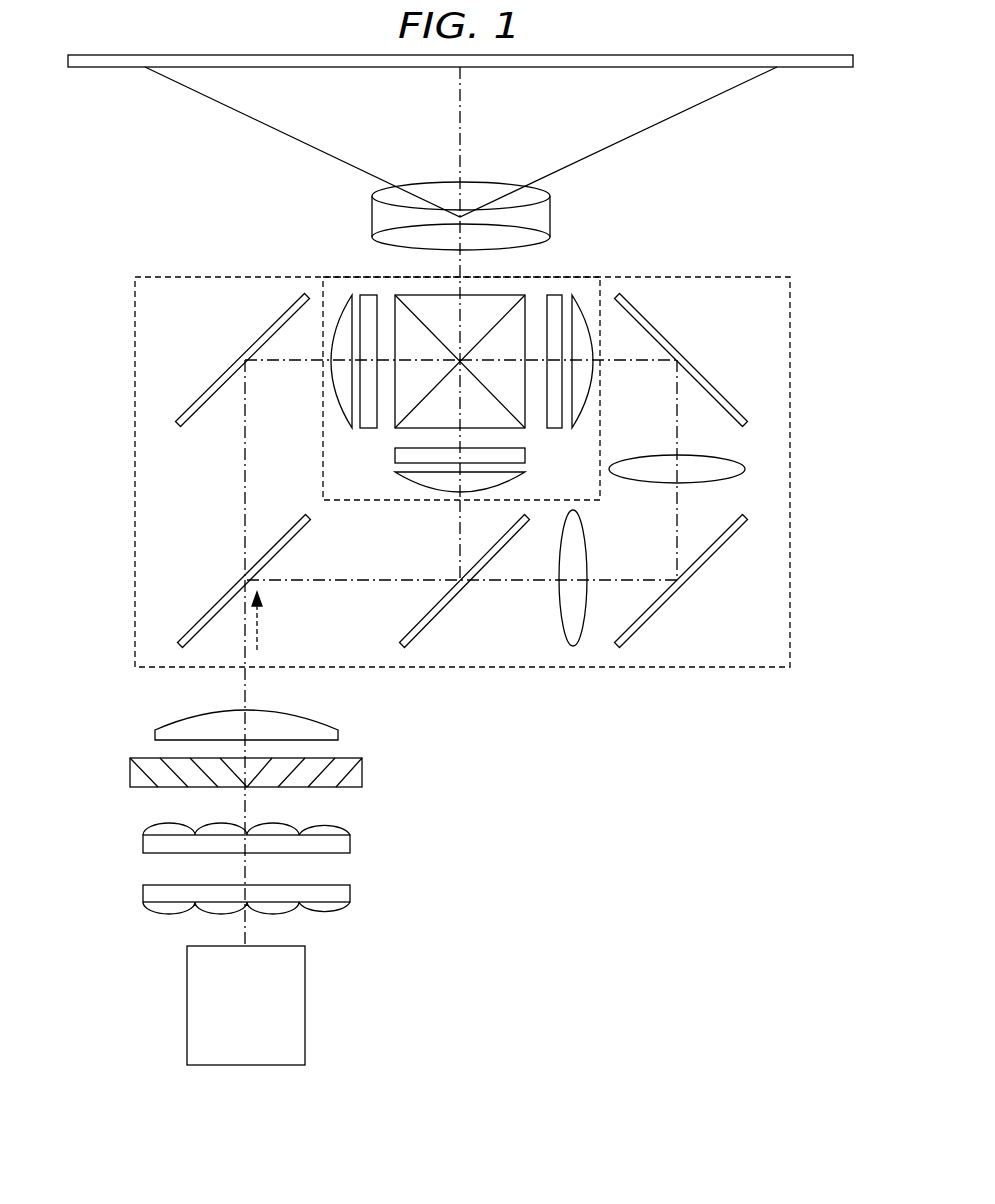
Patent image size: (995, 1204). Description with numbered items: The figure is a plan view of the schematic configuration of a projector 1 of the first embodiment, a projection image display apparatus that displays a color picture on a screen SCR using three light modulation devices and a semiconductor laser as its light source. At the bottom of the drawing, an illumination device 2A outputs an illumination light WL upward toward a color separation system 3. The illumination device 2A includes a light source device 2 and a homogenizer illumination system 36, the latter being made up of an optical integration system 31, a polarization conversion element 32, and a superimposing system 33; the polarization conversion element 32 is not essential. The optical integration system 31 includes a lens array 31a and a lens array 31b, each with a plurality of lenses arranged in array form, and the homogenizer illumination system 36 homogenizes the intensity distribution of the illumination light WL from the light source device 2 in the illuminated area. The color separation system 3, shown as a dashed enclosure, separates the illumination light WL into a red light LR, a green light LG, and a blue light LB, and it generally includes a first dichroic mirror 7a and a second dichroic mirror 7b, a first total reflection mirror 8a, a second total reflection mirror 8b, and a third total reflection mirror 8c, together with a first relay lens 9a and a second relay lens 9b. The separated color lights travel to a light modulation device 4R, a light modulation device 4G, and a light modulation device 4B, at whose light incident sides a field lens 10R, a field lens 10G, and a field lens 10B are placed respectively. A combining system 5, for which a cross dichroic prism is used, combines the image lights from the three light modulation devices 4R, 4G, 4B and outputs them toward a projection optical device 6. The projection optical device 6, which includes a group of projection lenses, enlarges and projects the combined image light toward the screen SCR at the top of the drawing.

The projector 1 is at (803, 248).
The light source device 2 is at (353, 1005).
The illumination device 2A is at (354, 882).
The color separation system 3 is at (135, 418).
The light modulation device 4R is at (367, 292).
The light modulation device 4G is at (397, 455).
The light modulation device 4B is at (556, 292).
The combining system 5 is at (483, 302).
The projection optical device 6 is at (441, 194).
The first dichroic mirror 7a is at (210, 612).
The second dichroic mirror 7b is at (456, 622).
The first total reflection mirror 8a is at (222, 375).
The second total reflection mirror 8b is at (705, 563).
The third total reflection mirror 8c is at (705, 378).
The first relay lens 9a is at (560, 590).
The second relay lens 9b is at (735, 470).
The field lens 10R is at (341, 292).
The field lens 10G is at (397, 482).
The field lens 10B is at (582, 292).
The optical integration system 31 is at (308, 868).
The lens array 31a is at (352, 895).
The lens array 31b is at (352, 845).
The polarization conversion element 32 is at (365, 773).
The superimposing system 33 is at (330, 722).
The homogenizer illumination system 36 is at (327, 807).
The screen SCR is at (822, 70).
The illumination light WL is at (259, 634).
The red light LR is at (245, 492).
The green light LG is at (460, 545).
The blue light LB is at (677, 545).